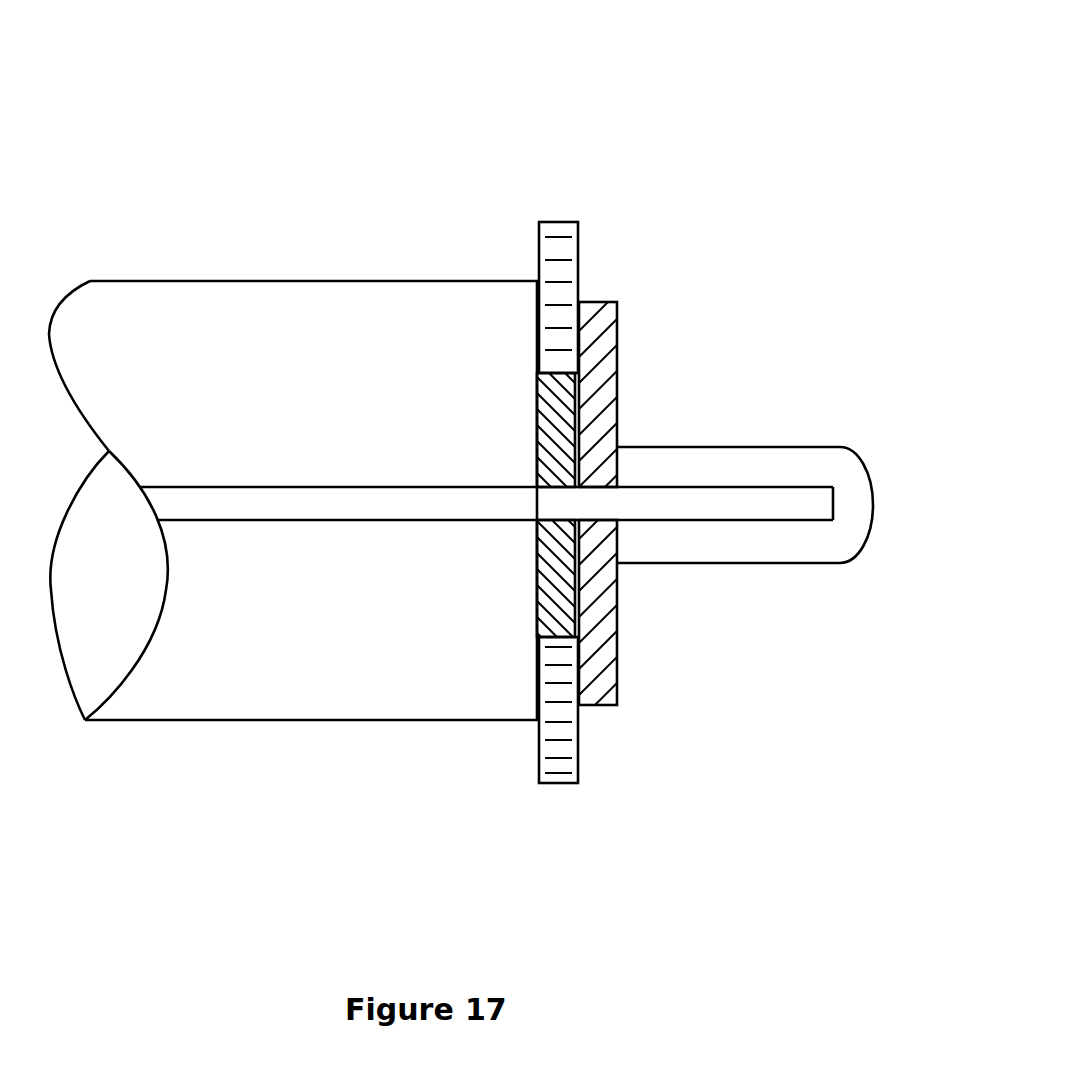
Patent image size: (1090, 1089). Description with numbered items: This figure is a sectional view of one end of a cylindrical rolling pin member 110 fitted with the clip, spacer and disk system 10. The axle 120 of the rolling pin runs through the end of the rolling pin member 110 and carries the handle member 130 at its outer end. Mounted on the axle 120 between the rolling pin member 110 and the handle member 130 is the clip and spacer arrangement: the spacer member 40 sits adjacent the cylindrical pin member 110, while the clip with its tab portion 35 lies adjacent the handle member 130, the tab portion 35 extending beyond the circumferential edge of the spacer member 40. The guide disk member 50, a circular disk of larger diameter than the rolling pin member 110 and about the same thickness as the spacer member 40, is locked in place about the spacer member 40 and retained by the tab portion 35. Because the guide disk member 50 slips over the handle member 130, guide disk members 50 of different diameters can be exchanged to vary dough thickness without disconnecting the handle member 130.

The clip, spacer and disk system 10 is at (645, 162).
The rolling pin member 110 is at (259, 321).
The axle 120 is at (753, 508).
The handle member 130 is at (772, 465).
The guide disk member 50 is at (540, 258).
The spacer member 40 is at (560, 407).
The tab portion 35 is at (603, 312).